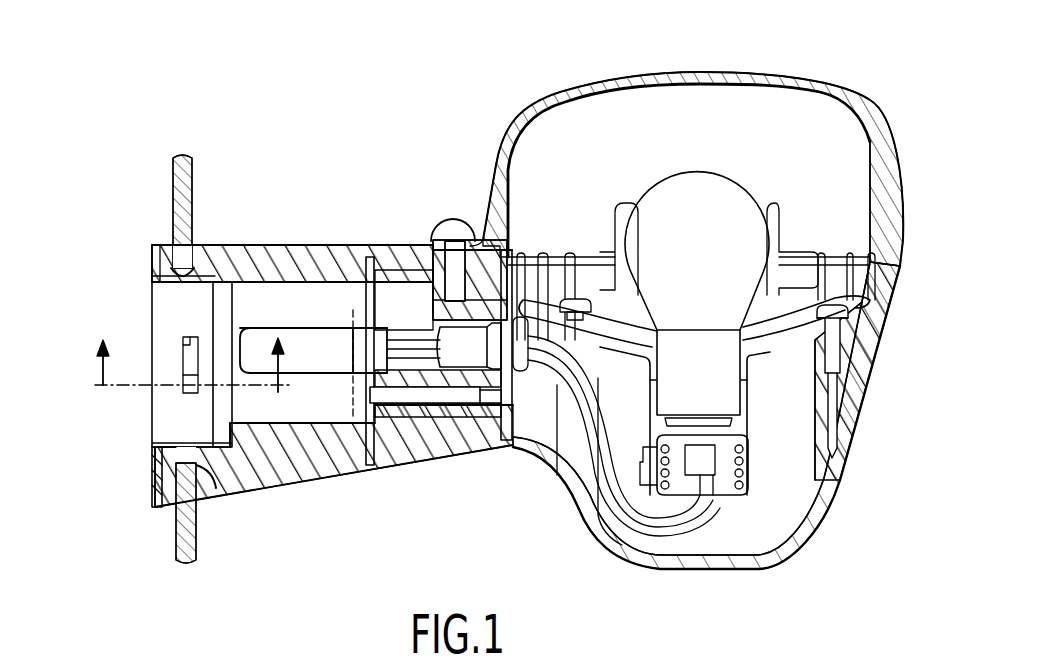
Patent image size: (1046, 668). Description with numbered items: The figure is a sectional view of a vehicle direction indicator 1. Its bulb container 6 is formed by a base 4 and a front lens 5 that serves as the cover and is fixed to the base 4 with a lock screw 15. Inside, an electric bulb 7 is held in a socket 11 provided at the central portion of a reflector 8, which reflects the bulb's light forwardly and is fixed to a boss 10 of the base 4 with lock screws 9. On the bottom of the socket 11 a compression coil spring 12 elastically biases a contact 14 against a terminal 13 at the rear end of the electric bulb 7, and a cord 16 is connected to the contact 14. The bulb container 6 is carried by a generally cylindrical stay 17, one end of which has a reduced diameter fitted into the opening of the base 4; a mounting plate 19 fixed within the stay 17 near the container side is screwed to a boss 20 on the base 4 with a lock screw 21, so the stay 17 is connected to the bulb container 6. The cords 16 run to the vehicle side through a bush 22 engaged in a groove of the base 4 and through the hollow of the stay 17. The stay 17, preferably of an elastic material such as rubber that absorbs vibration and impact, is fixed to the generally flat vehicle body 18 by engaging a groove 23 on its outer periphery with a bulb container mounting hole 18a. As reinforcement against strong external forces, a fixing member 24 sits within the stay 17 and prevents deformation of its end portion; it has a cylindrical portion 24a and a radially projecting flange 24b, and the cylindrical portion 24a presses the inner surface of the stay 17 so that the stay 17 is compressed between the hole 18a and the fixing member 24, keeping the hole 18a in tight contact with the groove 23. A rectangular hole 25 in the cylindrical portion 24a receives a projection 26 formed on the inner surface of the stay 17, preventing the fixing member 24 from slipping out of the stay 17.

The direction indicator 1 is at (496, 78).
The base 4 is at (710, 556).
The front lens 5 is at (696, 74).
The bulb container 6 is at (594, 560).
The electric bulb 7 is at (716, 186).
The reflector 8 is at (778, 336).
The lock screws 9 is at (583, 302).
The boss 10 is at (576, 456).
The socket 11 is at (652, 395).
The compression coil spring 12 is at (728, 478).
The terminal 13 is at (705, 430).
The contact 14 is at (742, 440).
The lock screw 15 is at (452, 236).
The cord 16 is at (670, 520).
The stay 17 is at (330, 475).
The vehicle body 18 is at (192, 190).
The bulb container mounting hole 18a is at (198, 272).
The mounting plate 19 is at (368, 292).
The boss 20 is at (470, 415).
The lock screw 21 is at (447, 412).
The bush 22 is at (521, 368).
The groove 23 is at (209, 494).
The fixing member 24 is at (166, 422).
The cylindrical portion 24a is at (168, 300).
The flange 24b is at (156, 498).
The rectangular hole 25 is at (186, 345).
The projection 26 is at (190, 375).